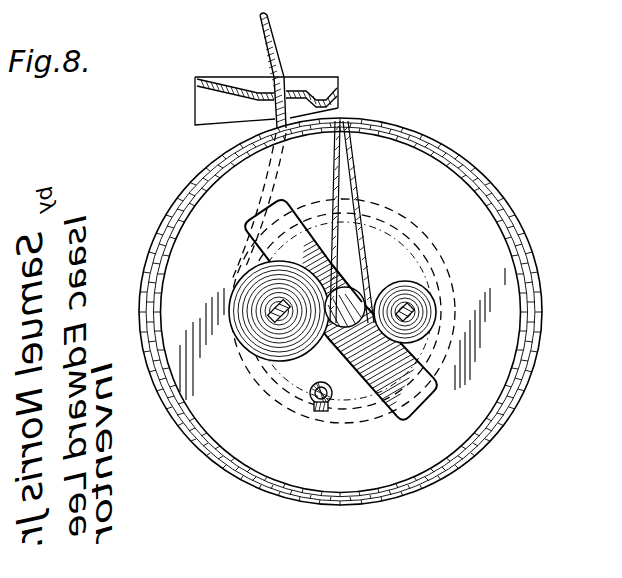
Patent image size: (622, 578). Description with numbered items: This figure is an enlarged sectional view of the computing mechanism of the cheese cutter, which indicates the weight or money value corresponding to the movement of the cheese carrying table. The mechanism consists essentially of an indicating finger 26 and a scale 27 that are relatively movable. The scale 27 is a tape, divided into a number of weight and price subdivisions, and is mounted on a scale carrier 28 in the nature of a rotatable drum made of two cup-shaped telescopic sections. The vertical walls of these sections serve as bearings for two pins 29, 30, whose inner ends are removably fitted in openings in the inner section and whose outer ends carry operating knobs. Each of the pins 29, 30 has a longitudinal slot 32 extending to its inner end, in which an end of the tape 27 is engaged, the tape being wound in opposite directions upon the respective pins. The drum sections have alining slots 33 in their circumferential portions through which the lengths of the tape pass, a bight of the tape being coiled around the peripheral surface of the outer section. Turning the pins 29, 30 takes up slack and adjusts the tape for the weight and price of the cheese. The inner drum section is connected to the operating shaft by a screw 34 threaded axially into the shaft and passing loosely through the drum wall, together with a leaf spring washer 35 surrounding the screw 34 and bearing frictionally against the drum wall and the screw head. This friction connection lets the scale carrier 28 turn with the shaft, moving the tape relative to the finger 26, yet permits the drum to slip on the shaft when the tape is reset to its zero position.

The indicating finger 26 is at (325, 83).
The scale 27 is at (356, 194).
The scale carrier 28 is at (546, 292).
The pin 29 is at (433, 305).
The pin 30 is at (248, 350).
The longitudinal slot 32 is at (253, 313).
The alining slots 33 is at (344, 114).
The screw 34 is at (305, 372).
The leaf spring washer 35 is at (368, 324).